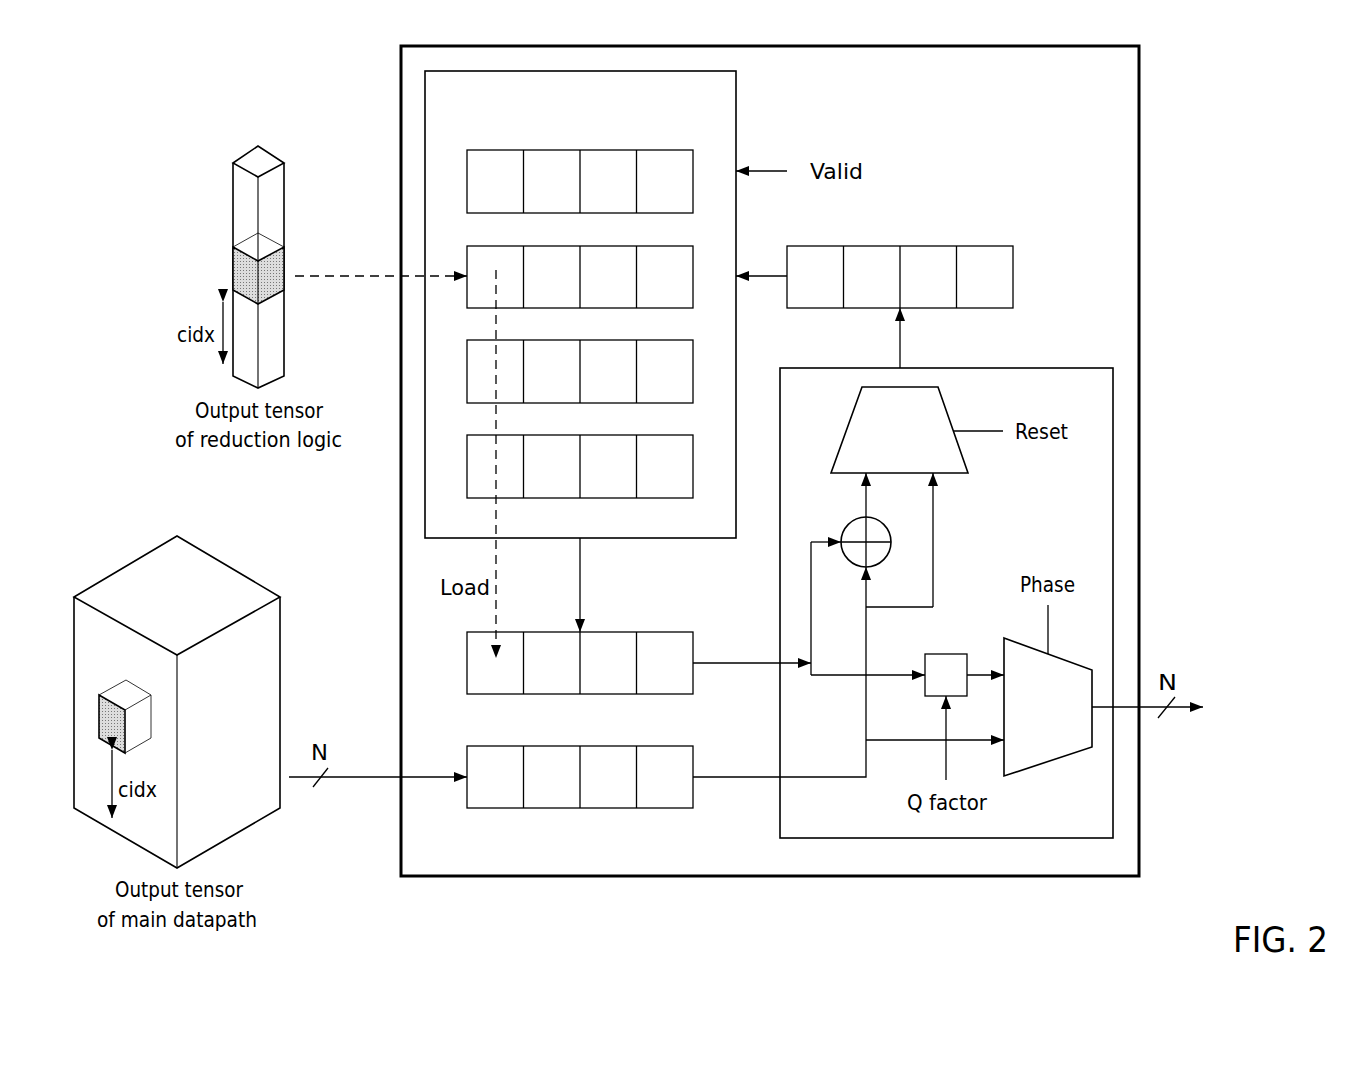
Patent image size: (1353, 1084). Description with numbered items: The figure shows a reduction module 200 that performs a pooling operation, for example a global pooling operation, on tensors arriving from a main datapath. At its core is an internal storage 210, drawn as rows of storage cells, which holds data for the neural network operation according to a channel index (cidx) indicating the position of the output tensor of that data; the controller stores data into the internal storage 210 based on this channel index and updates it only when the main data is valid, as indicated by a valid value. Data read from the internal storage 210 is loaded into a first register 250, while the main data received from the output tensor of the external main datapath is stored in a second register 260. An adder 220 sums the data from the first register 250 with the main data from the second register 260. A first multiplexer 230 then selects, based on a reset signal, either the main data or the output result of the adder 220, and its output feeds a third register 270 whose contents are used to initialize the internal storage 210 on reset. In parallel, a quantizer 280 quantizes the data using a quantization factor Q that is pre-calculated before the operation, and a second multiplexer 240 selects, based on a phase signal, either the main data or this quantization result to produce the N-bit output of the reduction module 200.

The reduction module 200 is at (1129, 82).
The internal storage 210 is at (674, 114).
The adder 220 is at (850, 522).
The first multiplexer 230 is at (848, 428).
The second multiplexer 240 is at (1048, 762).
The first register 250 is at (660, 632).
The second register 260 is at (660, 746).
The third register 270 is at (980, 246).
The quantizer 280 is at (946, 653).